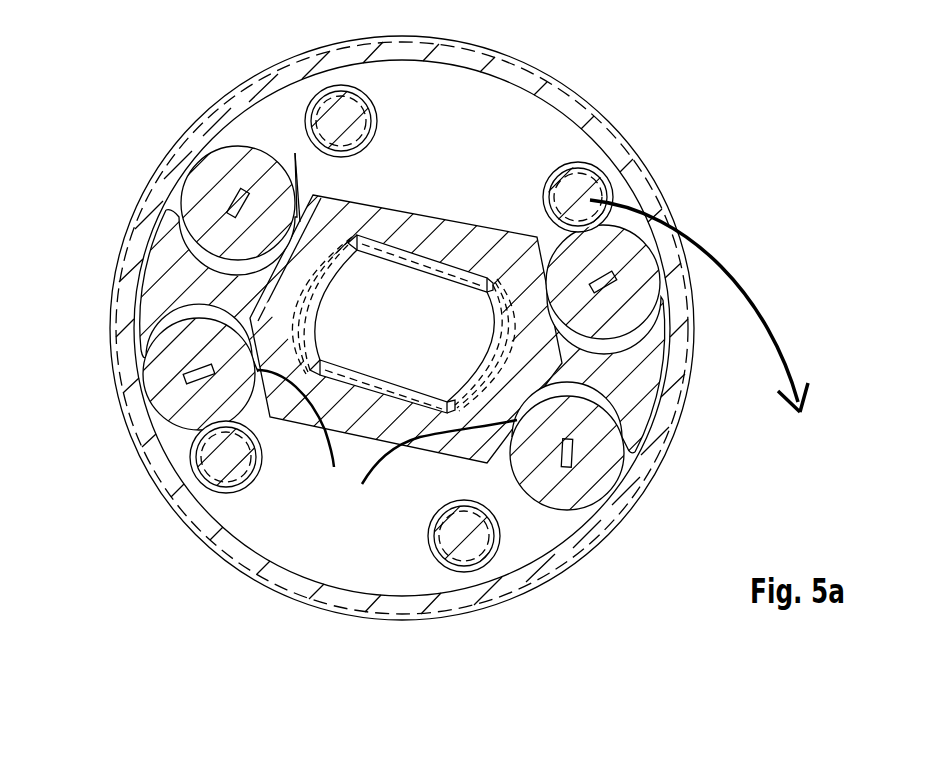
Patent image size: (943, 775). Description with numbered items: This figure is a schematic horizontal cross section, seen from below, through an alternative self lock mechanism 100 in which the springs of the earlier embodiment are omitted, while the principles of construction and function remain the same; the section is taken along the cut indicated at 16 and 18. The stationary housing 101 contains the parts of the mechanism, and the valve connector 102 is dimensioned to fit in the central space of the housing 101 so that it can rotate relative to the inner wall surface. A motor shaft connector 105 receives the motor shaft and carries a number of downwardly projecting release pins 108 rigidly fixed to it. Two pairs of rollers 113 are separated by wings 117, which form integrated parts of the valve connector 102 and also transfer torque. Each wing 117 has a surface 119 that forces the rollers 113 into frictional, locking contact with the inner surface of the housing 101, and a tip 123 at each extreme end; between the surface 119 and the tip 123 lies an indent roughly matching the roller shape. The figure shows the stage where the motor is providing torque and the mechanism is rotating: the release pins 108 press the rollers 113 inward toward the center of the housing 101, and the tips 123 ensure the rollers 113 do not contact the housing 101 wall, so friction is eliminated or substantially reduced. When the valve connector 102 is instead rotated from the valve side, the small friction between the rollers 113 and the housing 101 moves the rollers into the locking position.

The self lock mechanism 100 is at (250, 595).
The housing 101 is at (653, 183).
The valve connector 102 is at (428, 222).
The motor shaft connector 105 is at (543, 132).
The release pins 108 is at (340, 108).
The rollers 113 is at (212, 170).
The wing 117 is at (160, 268).
The surface 119 is at (387, 447).
The tip 123 is at (172, 211).
The section line indicator 16 is at (295, 153).
The view direction arrow 18 is at (699, 314).